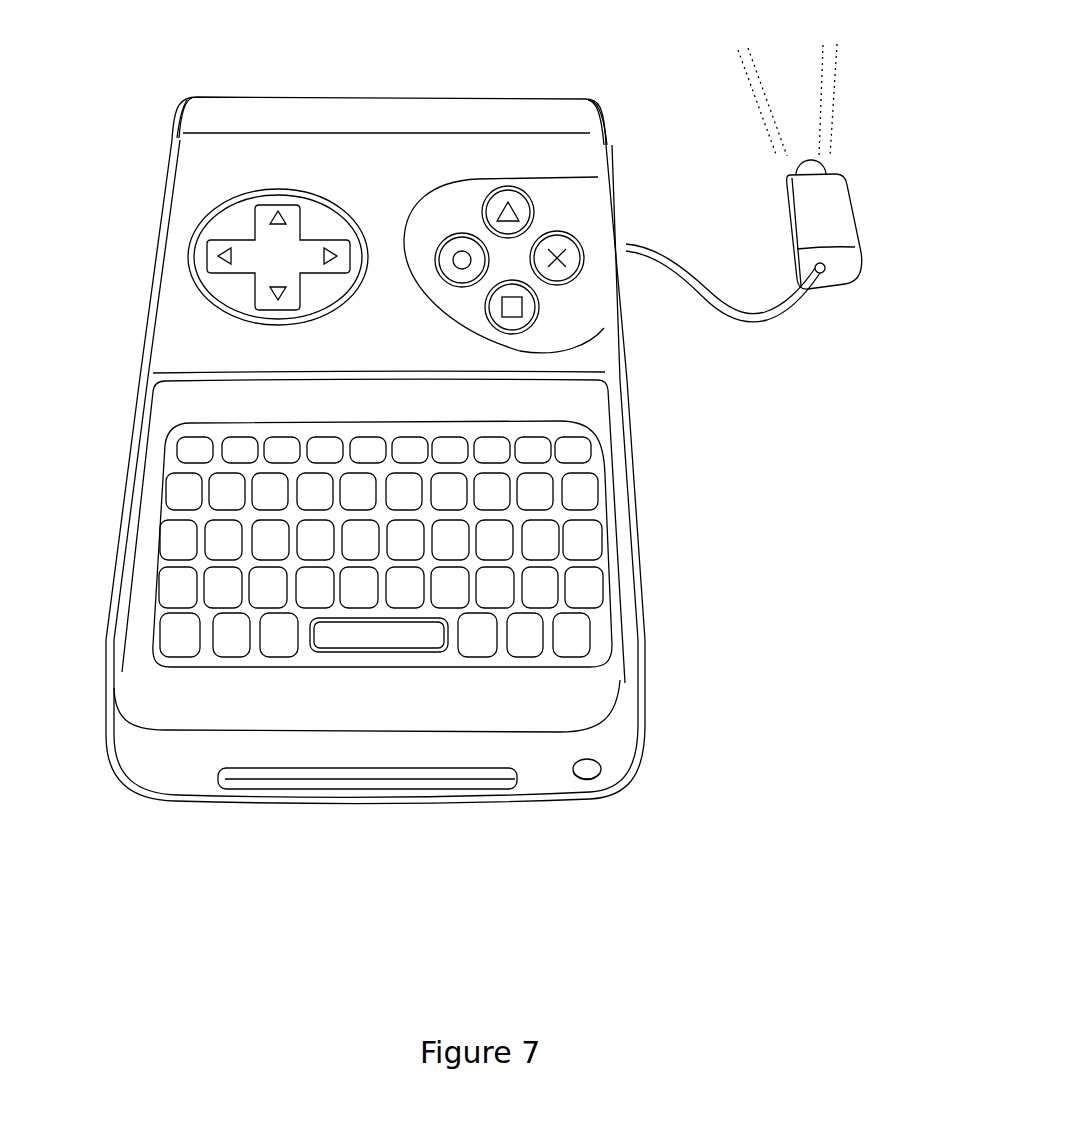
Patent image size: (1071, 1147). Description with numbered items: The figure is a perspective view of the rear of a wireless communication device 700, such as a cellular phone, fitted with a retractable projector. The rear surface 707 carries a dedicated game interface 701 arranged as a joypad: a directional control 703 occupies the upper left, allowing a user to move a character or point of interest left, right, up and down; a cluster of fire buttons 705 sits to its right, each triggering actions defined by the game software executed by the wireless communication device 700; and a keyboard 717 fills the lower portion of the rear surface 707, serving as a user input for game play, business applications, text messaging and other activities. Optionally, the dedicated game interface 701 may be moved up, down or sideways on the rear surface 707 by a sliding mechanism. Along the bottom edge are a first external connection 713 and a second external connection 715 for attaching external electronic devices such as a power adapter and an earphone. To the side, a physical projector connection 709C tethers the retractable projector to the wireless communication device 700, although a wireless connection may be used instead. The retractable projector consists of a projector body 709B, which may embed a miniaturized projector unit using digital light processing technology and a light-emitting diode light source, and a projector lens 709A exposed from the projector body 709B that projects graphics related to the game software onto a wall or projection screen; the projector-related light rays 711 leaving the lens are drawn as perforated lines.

The wireless communication device 700 is at (482, 506).
The dedicated game interface 701 is at (215, 172).
The directional control 703 is at (203, 253).
The fire buttons 705 is at (530, 208).
The rear surface 707 is at (350, 117).
The projector lens 709A is at (832, 162).
The projector body 709B is at (775, 218).
The physical projector connection 709C is at (720, 322).
The projector-related light rays 711 is at (740, 75).
The first external connection 713 is at (283, 778).
The second external connection 715 is at (597, 780).
The keyboard 717 is at (257, 655).